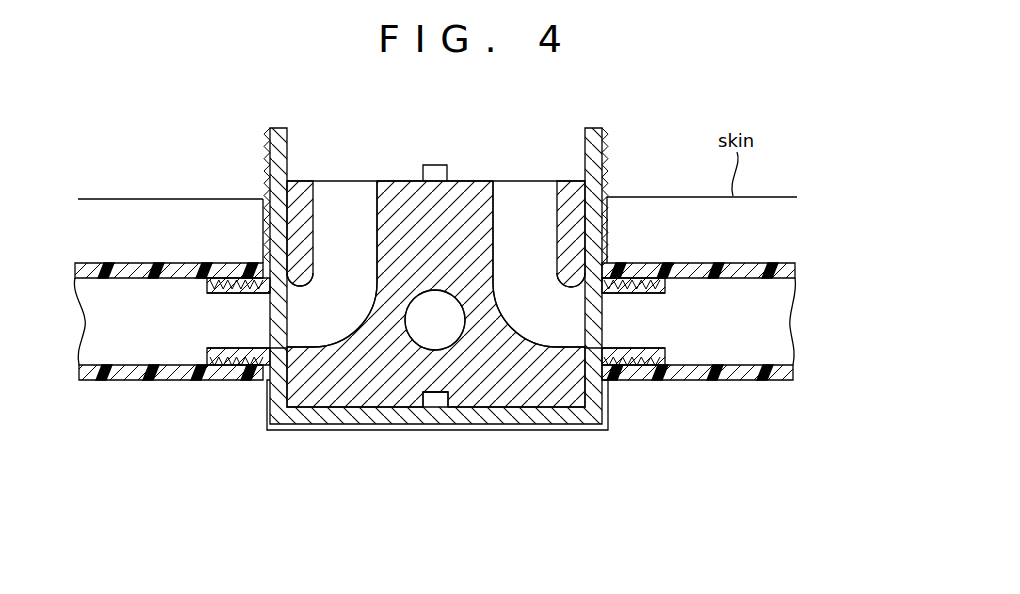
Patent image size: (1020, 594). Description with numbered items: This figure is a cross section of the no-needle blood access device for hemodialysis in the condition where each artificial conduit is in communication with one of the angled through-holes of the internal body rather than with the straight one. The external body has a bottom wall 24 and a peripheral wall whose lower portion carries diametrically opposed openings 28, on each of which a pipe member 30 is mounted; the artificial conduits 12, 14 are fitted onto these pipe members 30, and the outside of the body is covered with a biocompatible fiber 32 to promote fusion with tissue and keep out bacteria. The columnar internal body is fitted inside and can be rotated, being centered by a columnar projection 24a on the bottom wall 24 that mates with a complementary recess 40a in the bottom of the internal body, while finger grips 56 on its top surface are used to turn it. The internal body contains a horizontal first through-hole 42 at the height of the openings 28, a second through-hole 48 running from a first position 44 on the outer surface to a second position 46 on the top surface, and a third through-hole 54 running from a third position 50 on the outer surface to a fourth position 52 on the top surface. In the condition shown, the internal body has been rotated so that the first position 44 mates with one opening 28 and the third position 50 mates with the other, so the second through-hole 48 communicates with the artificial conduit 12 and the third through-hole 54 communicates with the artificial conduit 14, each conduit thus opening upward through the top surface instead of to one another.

The artificial conduit 12 is at (110, 384).
The artificial conduit 14 is at (760, 380).
The bottom wall 24 is at (548, 415).
The columnar projection 24a is at (437, 407).
The opening 28 is at (273, 324).
The pipe member 30 is at (206, 367).
The biocompatible fiber 32 is at (263, 217).
The recess 40a is at (427, 393).
The first through-hole 42 is at (440, 327).
The first position 44 is at (290, 303).
The second position 46 is at (346, 181).
The second through-hole 48 is at (338, 258).
The third position 50 is at (582, 302).
The fourth position 52 is at (527, 181).
The third through-hole 54 is at (530, 245).
The finger grips 56 is at (432, 165).